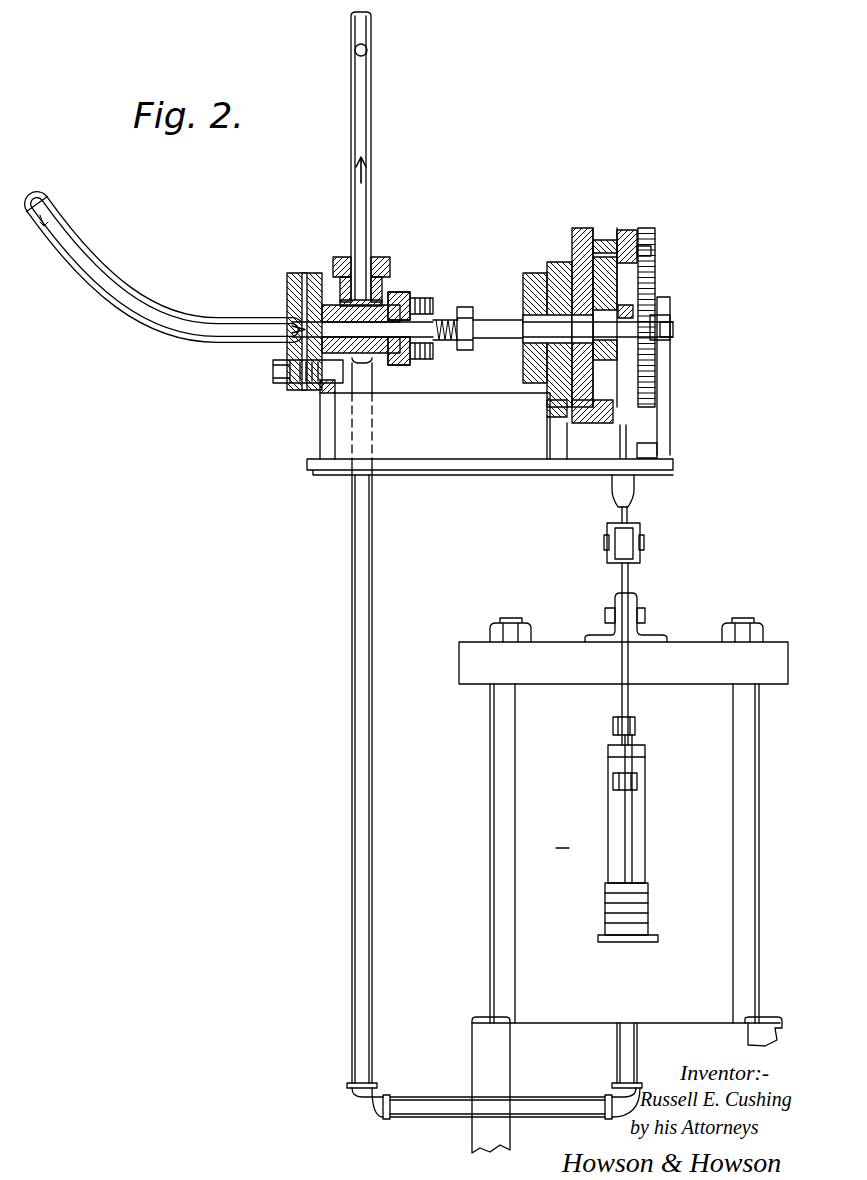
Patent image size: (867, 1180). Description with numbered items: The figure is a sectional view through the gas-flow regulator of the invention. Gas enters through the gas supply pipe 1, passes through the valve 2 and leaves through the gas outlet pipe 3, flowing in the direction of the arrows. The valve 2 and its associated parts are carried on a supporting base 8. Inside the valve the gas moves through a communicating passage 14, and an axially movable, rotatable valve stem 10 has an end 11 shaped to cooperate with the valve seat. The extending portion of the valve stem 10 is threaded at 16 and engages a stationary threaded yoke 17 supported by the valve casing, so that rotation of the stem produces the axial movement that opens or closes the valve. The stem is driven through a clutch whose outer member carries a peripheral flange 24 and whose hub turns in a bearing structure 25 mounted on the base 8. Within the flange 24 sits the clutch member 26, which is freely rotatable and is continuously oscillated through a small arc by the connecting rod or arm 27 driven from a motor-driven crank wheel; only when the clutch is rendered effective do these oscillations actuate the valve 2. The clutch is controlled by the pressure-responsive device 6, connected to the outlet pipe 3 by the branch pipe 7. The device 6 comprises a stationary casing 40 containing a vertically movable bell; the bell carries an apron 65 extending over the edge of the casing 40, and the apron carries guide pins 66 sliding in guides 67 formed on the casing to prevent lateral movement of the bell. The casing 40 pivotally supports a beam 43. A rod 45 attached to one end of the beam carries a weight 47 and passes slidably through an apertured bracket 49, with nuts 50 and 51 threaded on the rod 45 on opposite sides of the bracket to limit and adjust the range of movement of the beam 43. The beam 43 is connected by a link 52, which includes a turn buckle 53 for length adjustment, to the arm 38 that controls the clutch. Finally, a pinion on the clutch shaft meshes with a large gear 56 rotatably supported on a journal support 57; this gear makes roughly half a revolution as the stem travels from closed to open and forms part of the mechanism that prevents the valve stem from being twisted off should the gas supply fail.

The gas supply pipe 1 is at (93, 267).
The valve 2 is at (393, 293).
The gas outlet pipe 3 is at (371, 133).
The pressure-responsive device 6 is at (562, 840).
The branch pipe 7 is at (374, 852).
The supporting base 8 is at (468, 397).
The valve stem 10 is at (375, 335).
The end of valve stem 11 is at (293, 330).
The communicating passage 14 is at (360, 272).
The threaded portion of valve stem 16 is at (490, 318).
The stationary threaded yoke 17 is at (470, 305).
The peripheral flange 24 is at (598, 230).
The bearing structure 25 is at (570, 245).
The clutch member 26 is at (613, 288).
The arm or rod 27 is at (630, 240).
The arm 38 is at (622, 307).
The stationary casing 40 is at (695, 912).
The beam 43 is at (624, 537).
The rod 45 is at (632, 833).
The weight 47 is at (635, 905).
The apertured bracket 49 is at (645, 750).
The nut 50 is at (636, 728).
The nut 51 is at (638, 783).
The link 52 is at (617, 434).
The turn buckle 53 is at (634, 490).
The large gear 56 is at (656, 278).
The journal support 57 is at (666, 378).
The apron 65 is at (688, 650).
The guide pins 66 is at (510, 623).
The guides 67 is at (492, 792).